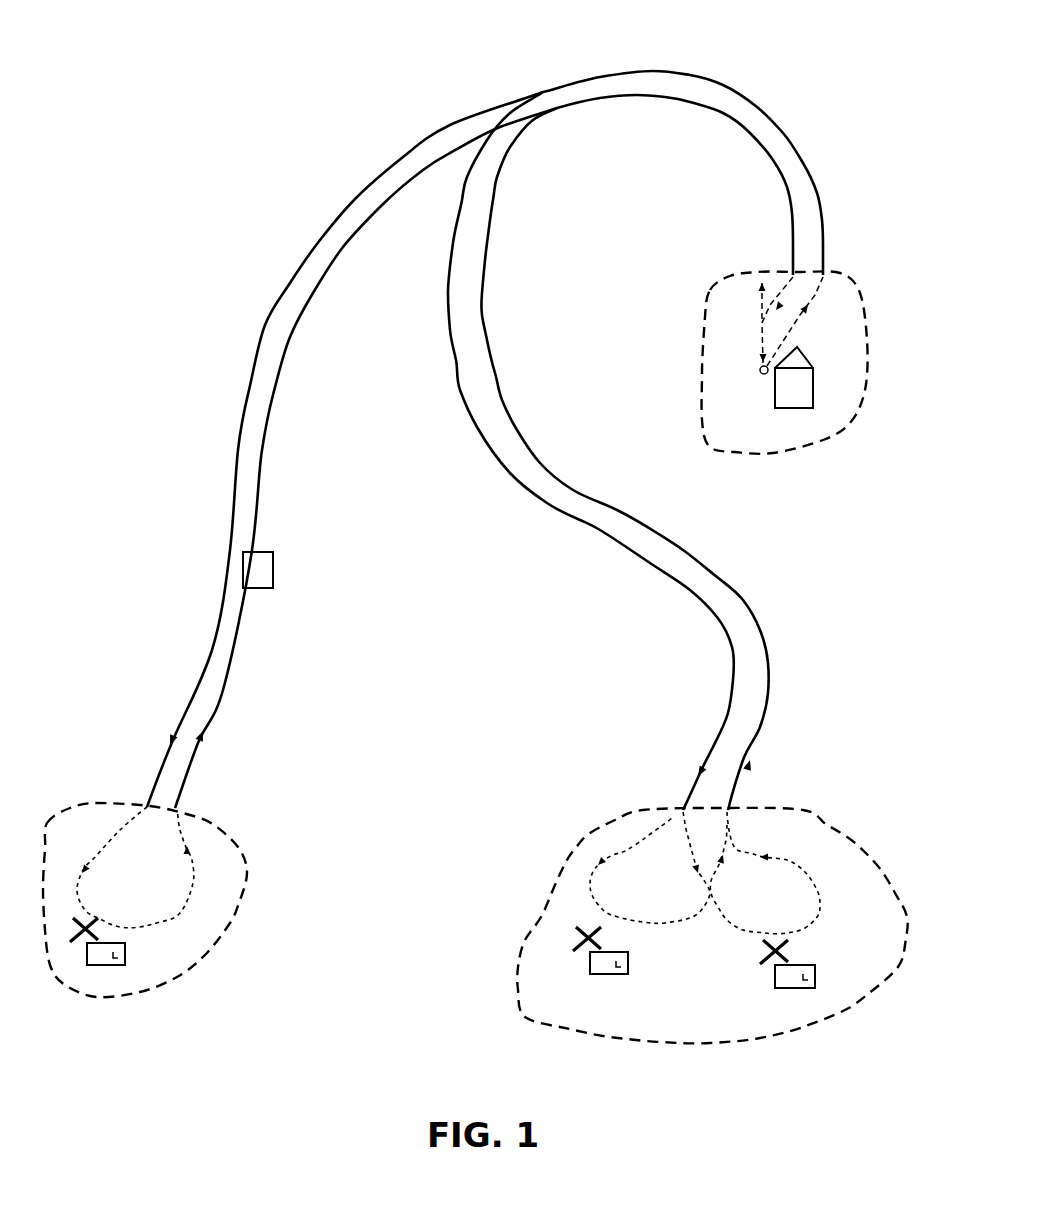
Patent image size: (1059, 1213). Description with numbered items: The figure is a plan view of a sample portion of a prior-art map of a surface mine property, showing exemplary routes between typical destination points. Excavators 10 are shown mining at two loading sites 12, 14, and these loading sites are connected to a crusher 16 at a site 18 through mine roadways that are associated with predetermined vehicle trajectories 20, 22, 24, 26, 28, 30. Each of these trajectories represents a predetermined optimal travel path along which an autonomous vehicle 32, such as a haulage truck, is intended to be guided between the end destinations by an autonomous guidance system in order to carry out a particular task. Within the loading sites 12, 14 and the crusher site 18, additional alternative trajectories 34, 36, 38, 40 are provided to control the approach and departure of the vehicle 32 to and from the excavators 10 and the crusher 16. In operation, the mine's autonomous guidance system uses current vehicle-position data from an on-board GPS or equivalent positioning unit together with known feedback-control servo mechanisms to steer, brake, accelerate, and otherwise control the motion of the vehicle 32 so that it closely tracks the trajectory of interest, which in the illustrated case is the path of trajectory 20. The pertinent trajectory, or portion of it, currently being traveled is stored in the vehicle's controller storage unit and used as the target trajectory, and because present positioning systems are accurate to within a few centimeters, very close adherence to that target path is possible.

The excavator 10 is at (125, 955).
The loading site 12 is at (234, 917).
The loading site 14 is at (813, 1023).
The crusher 16 is at (814, 373).
The site 18 is at (853, 422).
The predetermined vehicle trajectory 20 is at (226, 694).
The predetermined vehicle trajectory 22 is at (211, 658).
The predetermined vehicle trajectory 24 is at (662, 100).
The predetermined vehicle trajectory 26 is at (705, 77).
The predetermined vehicle trajectory 28 is at (765, 713).
The predetermined vehicle trajectory 30 is at (728, 705).
The autonomous vehicle 32 is at (273, 557).
The alternative trajectory 34 is at (193, 873).
The alternative trajectory 36 is at (623, 853).
The alternative trajectory 38 is at (790, 860).
The alternative trajectory 40 is at (812, 297).